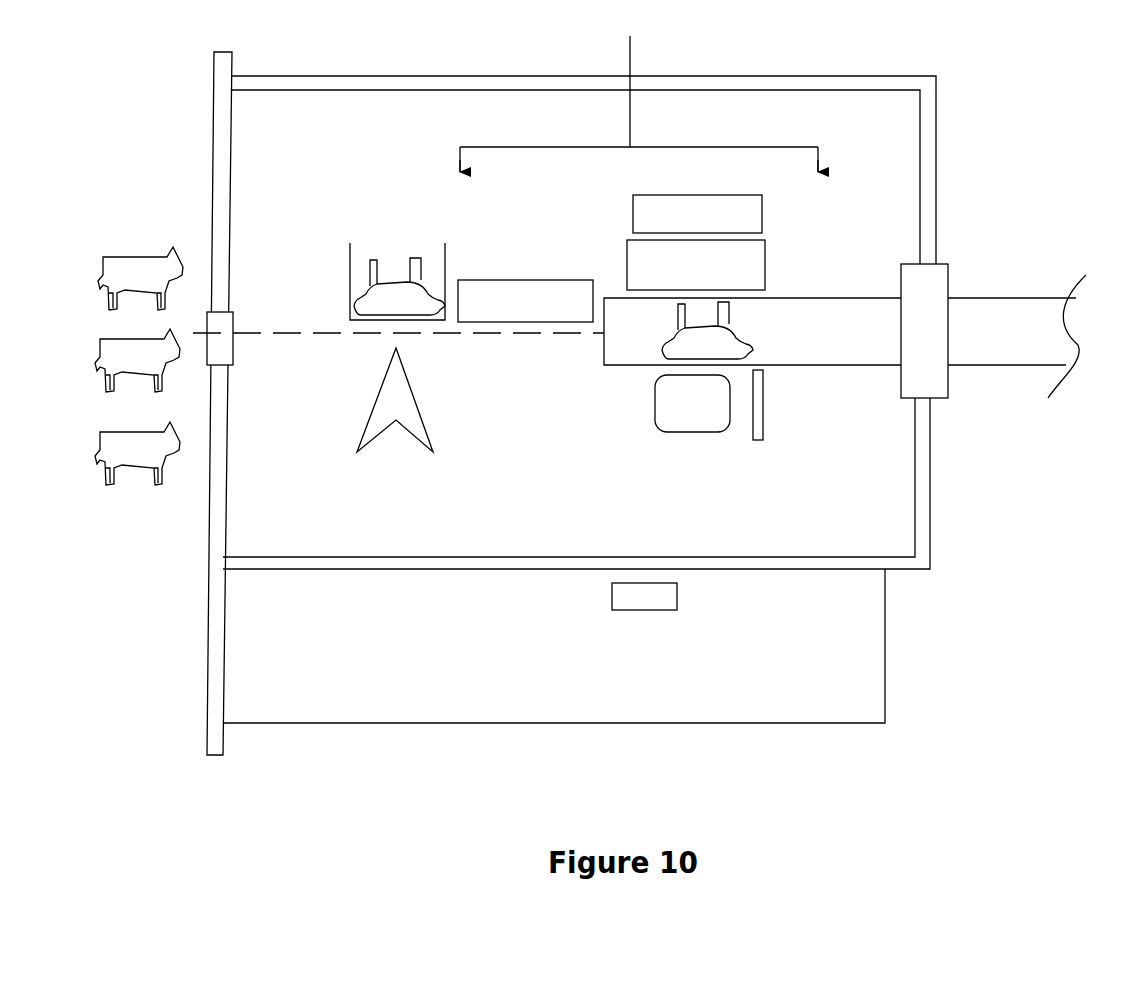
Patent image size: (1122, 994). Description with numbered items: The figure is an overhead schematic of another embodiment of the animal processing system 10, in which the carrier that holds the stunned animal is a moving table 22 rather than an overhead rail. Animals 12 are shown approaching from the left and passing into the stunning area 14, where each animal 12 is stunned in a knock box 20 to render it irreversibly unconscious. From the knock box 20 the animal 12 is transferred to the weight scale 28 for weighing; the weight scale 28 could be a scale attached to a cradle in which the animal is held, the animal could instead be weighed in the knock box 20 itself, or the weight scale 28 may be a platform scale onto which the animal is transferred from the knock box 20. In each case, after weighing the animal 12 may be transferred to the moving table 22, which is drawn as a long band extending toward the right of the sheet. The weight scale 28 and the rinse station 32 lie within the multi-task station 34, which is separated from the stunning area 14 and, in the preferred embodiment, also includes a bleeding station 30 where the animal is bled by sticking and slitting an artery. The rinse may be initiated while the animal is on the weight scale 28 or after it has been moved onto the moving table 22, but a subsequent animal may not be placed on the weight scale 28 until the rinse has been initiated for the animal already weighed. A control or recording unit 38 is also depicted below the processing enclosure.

The animal processing system 10 is at (952, 585).
The animal 12 is at (135, 262).
The stunning area 14 is at (392, 226).
The knock box 20 is at (348, 265).
The moving table 22 is at (850, 355).
The weight scale 28 is at (490, 292).
The bleeding station 30 is at (762, 214).
The rinse station 32 is at (692, 400).
The multi-task station 34 is at (639, 87).
The control unit 38 is at (668, 602).